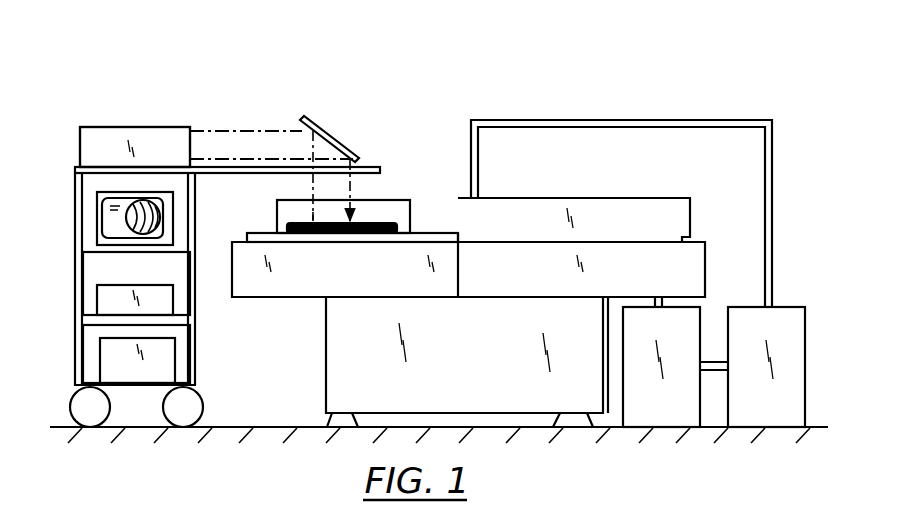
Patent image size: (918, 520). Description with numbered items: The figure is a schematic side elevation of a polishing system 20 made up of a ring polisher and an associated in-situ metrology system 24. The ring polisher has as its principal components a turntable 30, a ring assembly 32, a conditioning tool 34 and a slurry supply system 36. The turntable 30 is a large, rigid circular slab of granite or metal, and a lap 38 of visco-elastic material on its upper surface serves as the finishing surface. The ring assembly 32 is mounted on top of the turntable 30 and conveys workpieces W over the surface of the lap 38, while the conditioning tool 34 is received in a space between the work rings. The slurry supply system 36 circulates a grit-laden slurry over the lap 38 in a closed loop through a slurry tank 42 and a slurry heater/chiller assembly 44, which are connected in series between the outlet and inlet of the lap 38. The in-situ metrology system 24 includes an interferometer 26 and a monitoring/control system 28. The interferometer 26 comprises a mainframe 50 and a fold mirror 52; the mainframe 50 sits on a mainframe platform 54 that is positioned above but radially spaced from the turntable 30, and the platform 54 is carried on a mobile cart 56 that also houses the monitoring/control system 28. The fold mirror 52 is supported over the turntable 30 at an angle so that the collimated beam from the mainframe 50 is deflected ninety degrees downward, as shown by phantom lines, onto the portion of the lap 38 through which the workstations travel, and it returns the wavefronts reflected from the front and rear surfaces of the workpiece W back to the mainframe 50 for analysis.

The polishing system 20 is at (432, 84).
The in-situ metrology system 24 is at (283, 84).
The interferometer 26 is at (124, 99).
The monitoring/control system 28 is at (95, 239).
The turntable 30 is at (283, 299).
The ring assembly 32 is at (277, 203).
The conditioning tool 34 is at (535, 197).
The slurry supply system 36 is at (803, 294).
The lap 38 is at (422, 237).
The slurry tank 42 is at (693, 320).
The slurry heater/chiller assembly 44 is at (798, 332).
The mainframe 50 is at (163, 127).
The fold mirror 52 is at (320, 125).
The mainframe platform 54 is at (85, 168).
The mobile cart 56 is at (82, 353).
The workpiece W is at (365, 222).